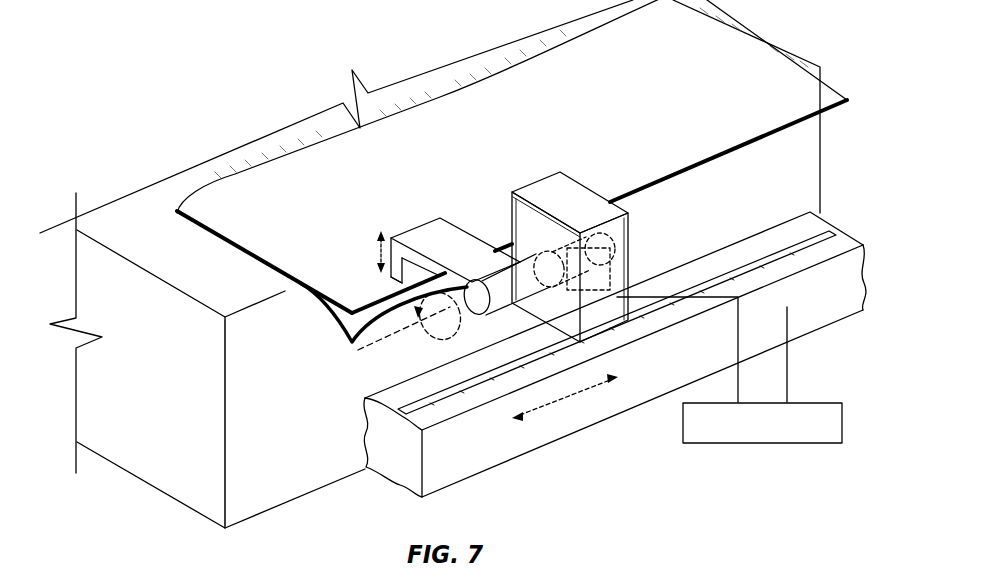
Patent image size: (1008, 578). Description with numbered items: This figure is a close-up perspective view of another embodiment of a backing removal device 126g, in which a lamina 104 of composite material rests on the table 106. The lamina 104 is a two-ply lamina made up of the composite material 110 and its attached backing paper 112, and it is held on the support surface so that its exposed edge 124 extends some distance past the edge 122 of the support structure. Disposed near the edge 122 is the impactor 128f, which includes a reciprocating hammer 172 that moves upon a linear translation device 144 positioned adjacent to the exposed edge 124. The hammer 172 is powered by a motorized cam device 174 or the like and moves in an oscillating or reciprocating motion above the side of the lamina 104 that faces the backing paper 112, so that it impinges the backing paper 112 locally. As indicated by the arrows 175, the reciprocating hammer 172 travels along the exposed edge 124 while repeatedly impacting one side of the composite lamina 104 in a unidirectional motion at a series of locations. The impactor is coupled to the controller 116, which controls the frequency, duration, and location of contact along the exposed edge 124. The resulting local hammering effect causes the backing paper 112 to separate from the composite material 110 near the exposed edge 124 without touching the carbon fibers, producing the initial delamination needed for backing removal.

The lamina 104 is at (527, 179).
The table 106 is at (121, 210).
The composite material 110 is at (330, 322).
The backing paper 112 is at (350, 297).
The controller 116 is at (763, 444).
The edge of the support structure 122 is at (250, 312).
The exposed edge 124 is at (796, 138).
The backing removal device 126g is at (234, 34).
The impactor 128f is at (523, 227).
The linear translation device 144 is at (615, 362).
The reciprocating hammer 172 is at (437, 232).
The motorized cam device 174 is at (545, 192).
The arrows 175 is at (563, 398).